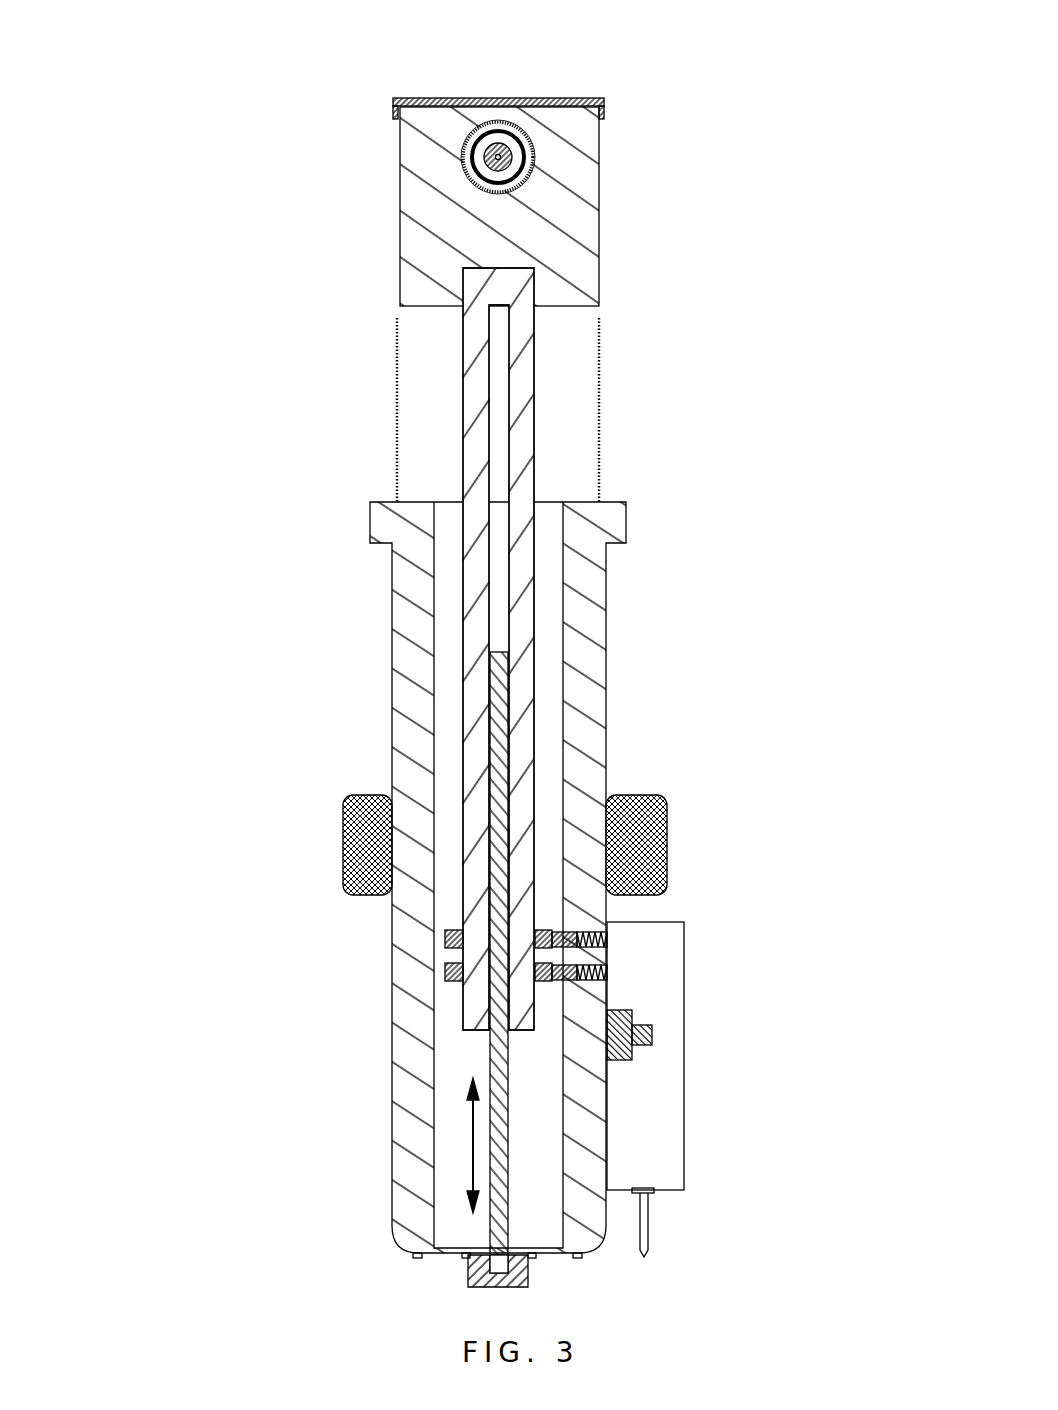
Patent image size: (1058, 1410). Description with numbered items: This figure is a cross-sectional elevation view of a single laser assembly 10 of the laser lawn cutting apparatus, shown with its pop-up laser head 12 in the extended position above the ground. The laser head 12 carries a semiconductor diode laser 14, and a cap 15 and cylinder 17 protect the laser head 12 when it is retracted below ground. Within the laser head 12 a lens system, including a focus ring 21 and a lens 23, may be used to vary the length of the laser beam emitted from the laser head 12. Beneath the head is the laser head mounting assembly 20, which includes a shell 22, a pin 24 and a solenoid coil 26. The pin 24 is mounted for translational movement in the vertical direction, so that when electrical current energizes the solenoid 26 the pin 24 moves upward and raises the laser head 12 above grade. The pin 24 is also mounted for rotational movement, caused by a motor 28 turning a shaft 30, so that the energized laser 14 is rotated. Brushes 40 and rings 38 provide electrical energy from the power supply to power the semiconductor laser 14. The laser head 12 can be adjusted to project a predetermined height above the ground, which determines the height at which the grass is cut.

The laser assembly 10 is at (305, 398).
The pop-up laser head 12 is at (598, 192).
The semiconductor diode laser 14 is at (502, 146).
The cap 15 is at (432, 98).
The cylinder 17 is at (397, 337).
The laser head mounting assembly 20 is at (332, 1007).
The focus ring 21 is at (461, 153).
The shell 22 is at (407, 1115).
The lens 23 is at (522, 138).
The pin 24 is at (477, 1002).
The solenoid coil 26 is at (343, 833).
The motor 28 is at (528, 1268).
The shaft 30 is at (497, 1213).
The rings 38 is at (443, 940).
The brushes 40 is at (607, 928).